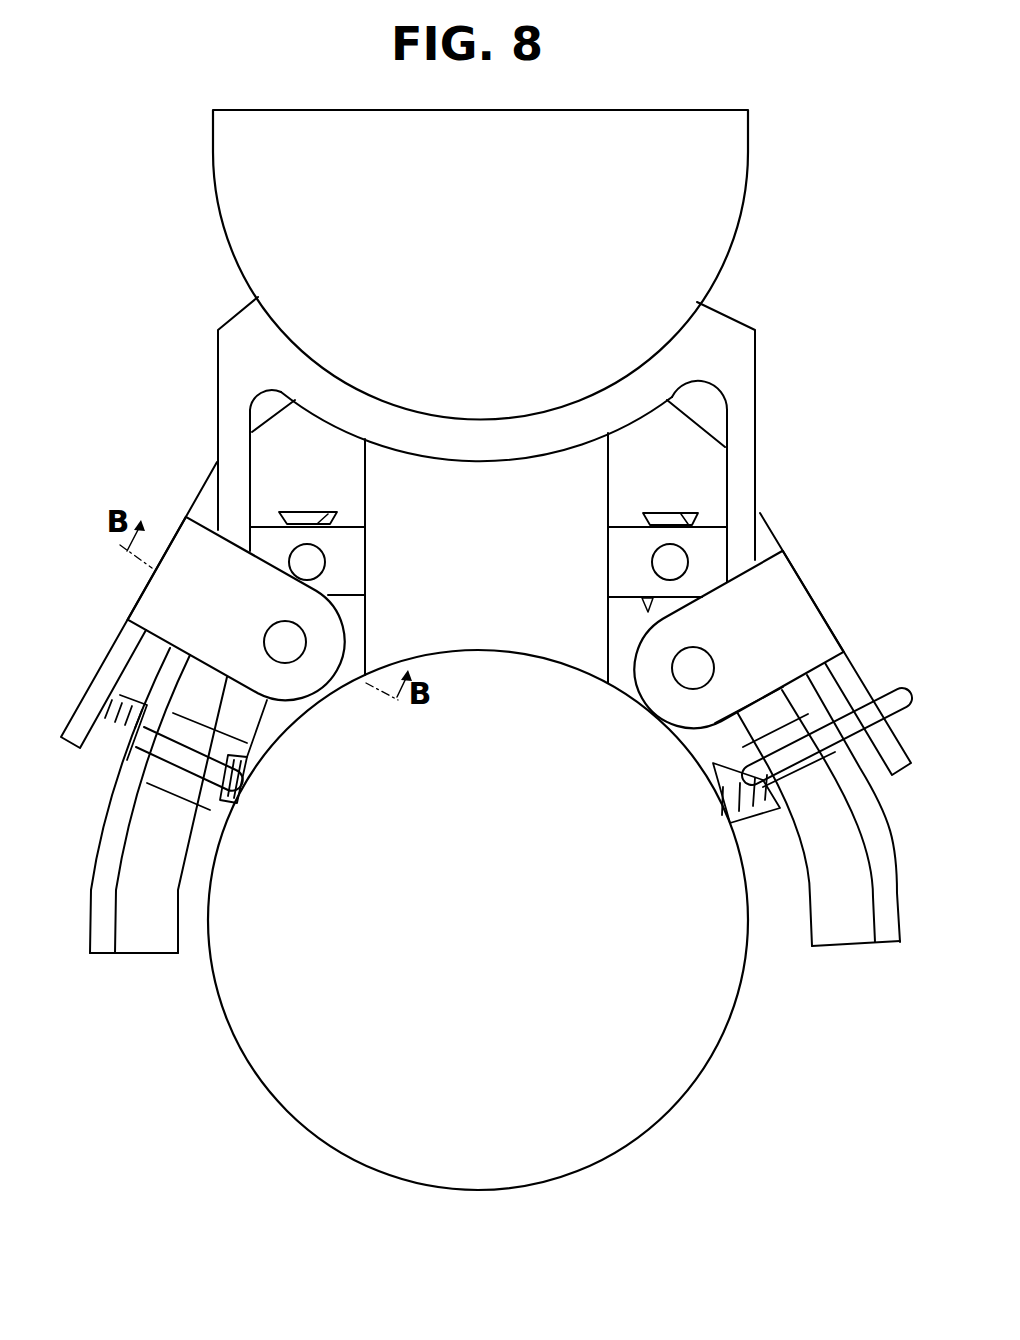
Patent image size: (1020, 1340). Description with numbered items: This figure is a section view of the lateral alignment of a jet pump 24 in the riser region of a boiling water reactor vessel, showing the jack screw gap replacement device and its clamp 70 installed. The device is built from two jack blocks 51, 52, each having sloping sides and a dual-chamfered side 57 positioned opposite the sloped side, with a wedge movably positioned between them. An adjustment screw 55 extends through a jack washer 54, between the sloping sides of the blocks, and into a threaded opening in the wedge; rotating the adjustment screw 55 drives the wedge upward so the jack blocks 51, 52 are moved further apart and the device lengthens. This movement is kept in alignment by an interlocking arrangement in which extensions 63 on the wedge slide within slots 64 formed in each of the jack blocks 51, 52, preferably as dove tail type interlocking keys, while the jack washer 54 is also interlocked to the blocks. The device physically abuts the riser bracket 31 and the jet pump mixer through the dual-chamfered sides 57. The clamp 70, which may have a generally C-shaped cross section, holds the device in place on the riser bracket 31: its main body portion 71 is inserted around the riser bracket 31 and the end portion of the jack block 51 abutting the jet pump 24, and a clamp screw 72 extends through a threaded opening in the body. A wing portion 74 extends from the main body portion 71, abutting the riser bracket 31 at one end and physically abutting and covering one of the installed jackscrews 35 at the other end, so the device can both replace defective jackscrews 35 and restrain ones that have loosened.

The jet pump 24 is at (492, 911).
The riser bracket 31 is at (218, 330).
The jackscrews 35 is at (255, 772).
The jack block 51 is at (358, 642).
The jack block 52 is at (368, 469).
The jack washer 54 is at (368, 543).
The adjustment screw 55 is at (325, 560).
The dual-chamfered side 57 is at (278, 404).
The extensions 63 is at (320, 520).
The slots 64 is at (300, 512).
The clamp 70 is at (128, 602).
The main body portion 71 is at (186, 612).
The clamp screw 72 is at (292, 621).
The wing portion 74 is at (76, 712).